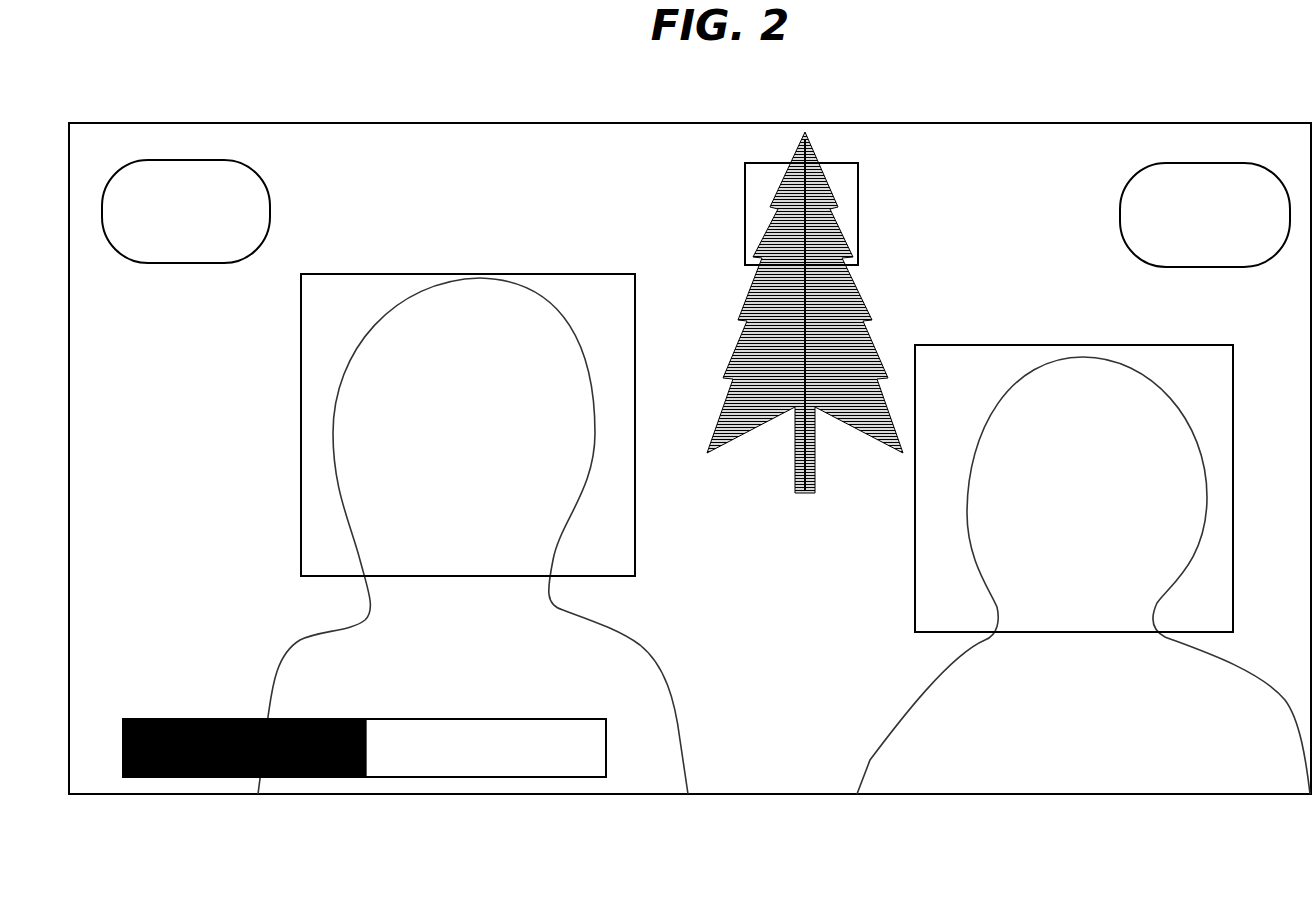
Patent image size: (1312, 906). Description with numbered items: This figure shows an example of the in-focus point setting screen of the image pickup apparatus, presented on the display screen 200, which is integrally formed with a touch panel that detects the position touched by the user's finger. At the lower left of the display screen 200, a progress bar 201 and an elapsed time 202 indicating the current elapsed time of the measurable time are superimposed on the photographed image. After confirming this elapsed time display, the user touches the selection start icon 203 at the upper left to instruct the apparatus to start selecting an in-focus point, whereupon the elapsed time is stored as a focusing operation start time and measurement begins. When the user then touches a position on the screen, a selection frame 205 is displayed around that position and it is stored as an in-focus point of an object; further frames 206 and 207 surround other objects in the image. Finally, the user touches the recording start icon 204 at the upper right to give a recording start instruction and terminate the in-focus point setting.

The display screen 200 is at (1162, 123).
The progress bar 201 is at (149, 719).
The elapsed time 202 is at (668, 762).
The selection start icon 203 is at (272, 207).
The recording start icon 204 is at (1120, 242).
The selection frame 205 is at (635, 535).
The face detection frame for person 2 206 is at (915, 607).
The object detection frame for tree 207 is at (858, 216).